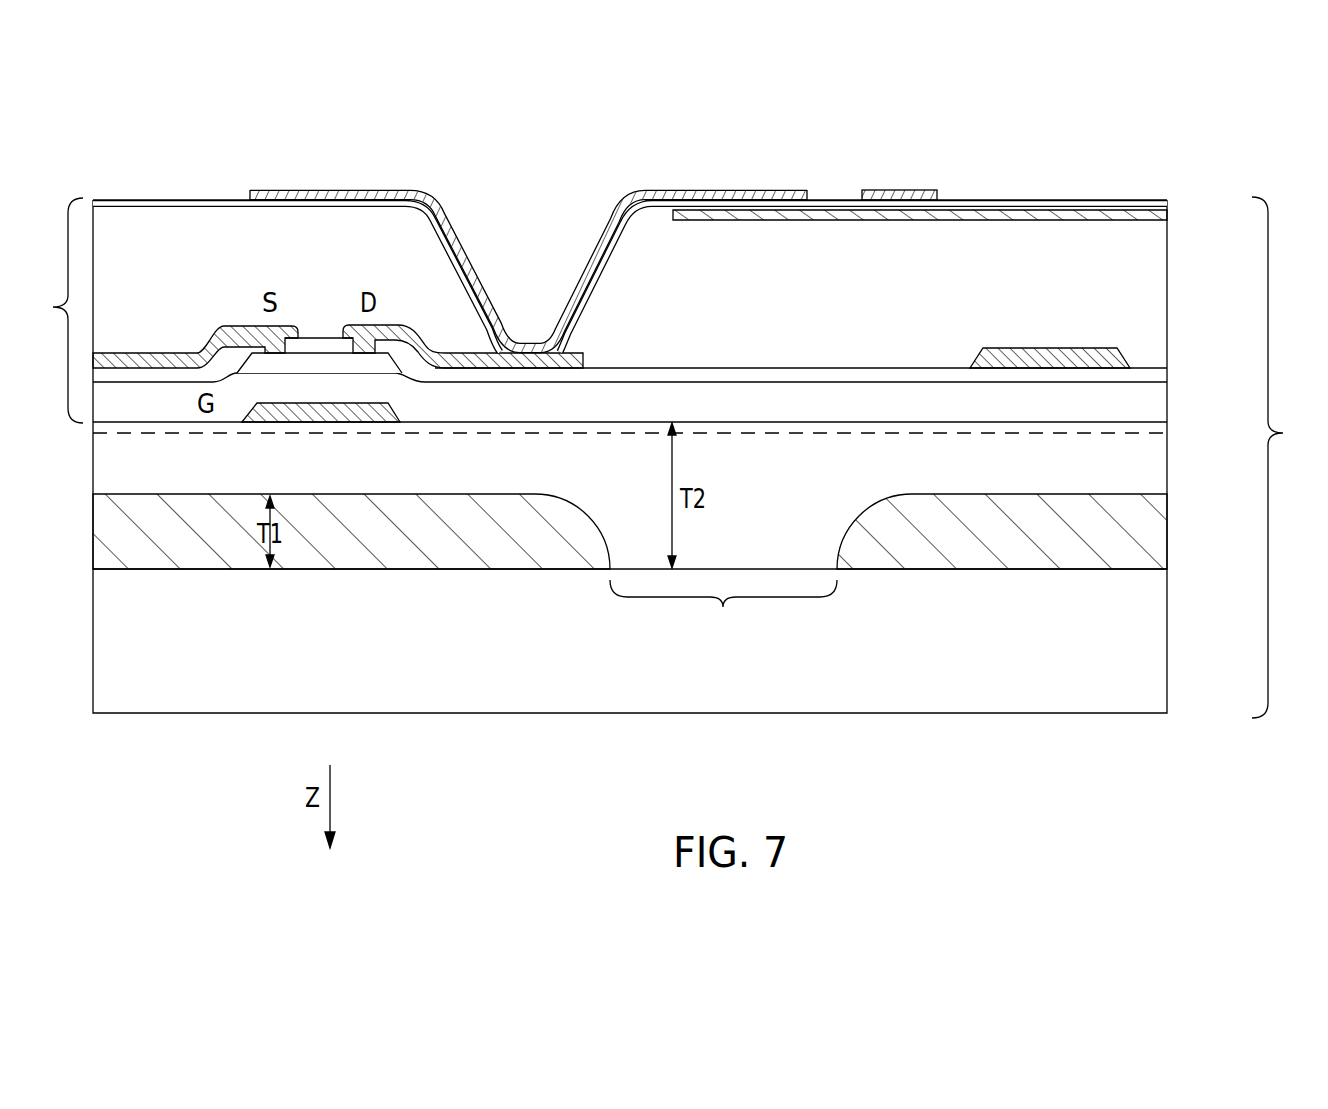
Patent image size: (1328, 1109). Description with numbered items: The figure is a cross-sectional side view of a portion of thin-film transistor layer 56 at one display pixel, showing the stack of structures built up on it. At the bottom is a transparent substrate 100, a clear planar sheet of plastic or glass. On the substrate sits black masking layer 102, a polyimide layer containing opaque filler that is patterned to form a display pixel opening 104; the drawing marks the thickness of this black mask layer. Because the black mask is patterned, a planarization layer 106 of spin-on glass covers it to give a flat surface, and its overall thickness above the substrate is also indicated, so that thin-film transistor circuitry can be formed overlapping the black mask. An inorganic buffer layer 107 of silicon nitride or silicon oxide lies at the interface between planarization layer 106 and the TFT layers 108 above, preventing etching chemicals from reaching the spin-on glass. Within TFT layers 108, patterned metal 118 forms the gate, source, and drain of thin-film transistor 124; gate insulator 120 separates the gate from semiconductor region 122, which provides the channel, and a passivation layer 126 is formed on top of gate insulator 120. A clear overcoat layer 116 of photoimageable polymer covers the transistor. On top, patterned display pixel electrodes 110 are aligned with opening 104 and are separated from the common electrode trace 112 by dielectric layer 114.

The thin-film transistor layer 56 is at (1283, 457).
The substrate 100 is at (1160, 645).
The black masking layer 102 is at (98, 525).
The opening 104 is at (723, 611).
The planarization layer 106 is at (98, 460).
The inorganic buffer layer 107 is at (1160, 432).
The TFT layers 108 is at (45, 310).
The display pixel electrodes 110 is at (733, 190).
The common electrode (Vcom) trace 112 is at (1095, 225).
The dielectric layer 114 is at (145, 203).
The clear overcoat layer 116 is at (832, 265).
The patterned metal 118 is at (143, 355).
The gate insulator 120 is at (930, 410).
The semiconductor region 122 is at (318, 368).
The thin-film transistor 124 is at (300, 285).
The passivation layer 126 is at (922, 372).